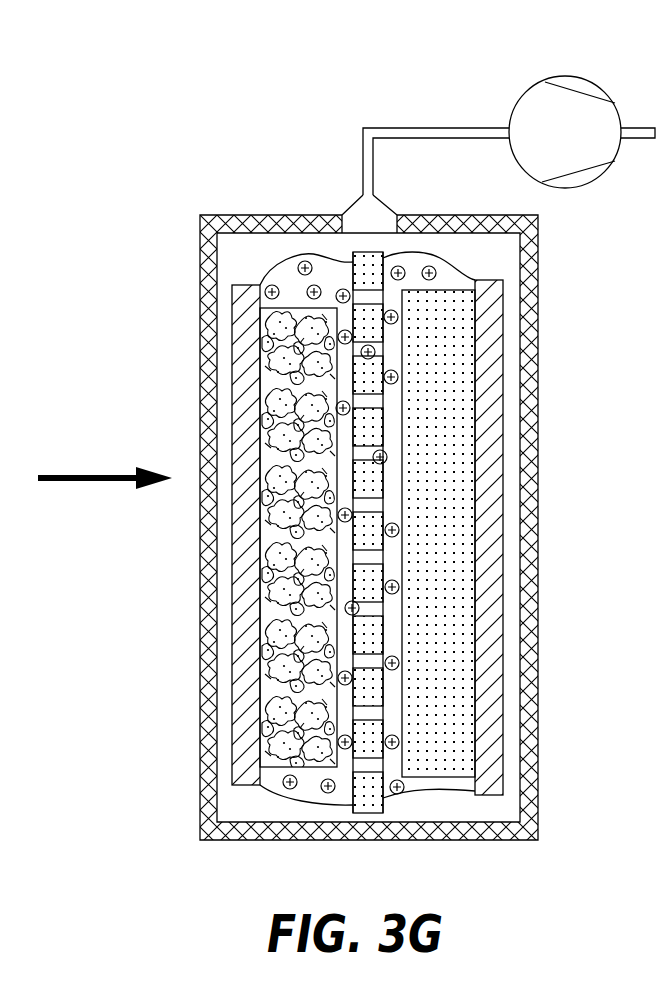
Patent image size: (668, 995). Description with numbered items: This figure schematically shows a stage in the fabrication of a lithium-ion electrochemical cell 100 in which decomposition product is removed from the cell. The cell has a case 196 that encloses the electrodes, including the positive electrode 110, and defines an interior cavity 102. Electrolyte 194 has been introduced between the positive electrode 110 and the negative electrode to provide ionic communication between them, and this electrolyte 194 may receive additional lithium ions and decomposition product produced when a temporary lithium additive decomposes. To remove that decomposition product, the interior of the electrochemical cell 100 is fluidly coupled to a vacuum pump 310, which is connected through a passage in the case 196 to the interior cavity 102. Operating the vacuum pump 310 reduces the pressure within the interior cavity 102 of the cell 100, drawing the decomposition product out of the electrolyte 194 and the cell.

The lithium-ion electrochemical cell 100 is at (168, 193).
The interior cavity 102 is at (240, 253).
The positive electrode 110 is at (292, 306).
The electrolyte 194 is at (415, 259).
The case 196 is at (533, 345).
The vacuum pump 310 is at (515, 103).